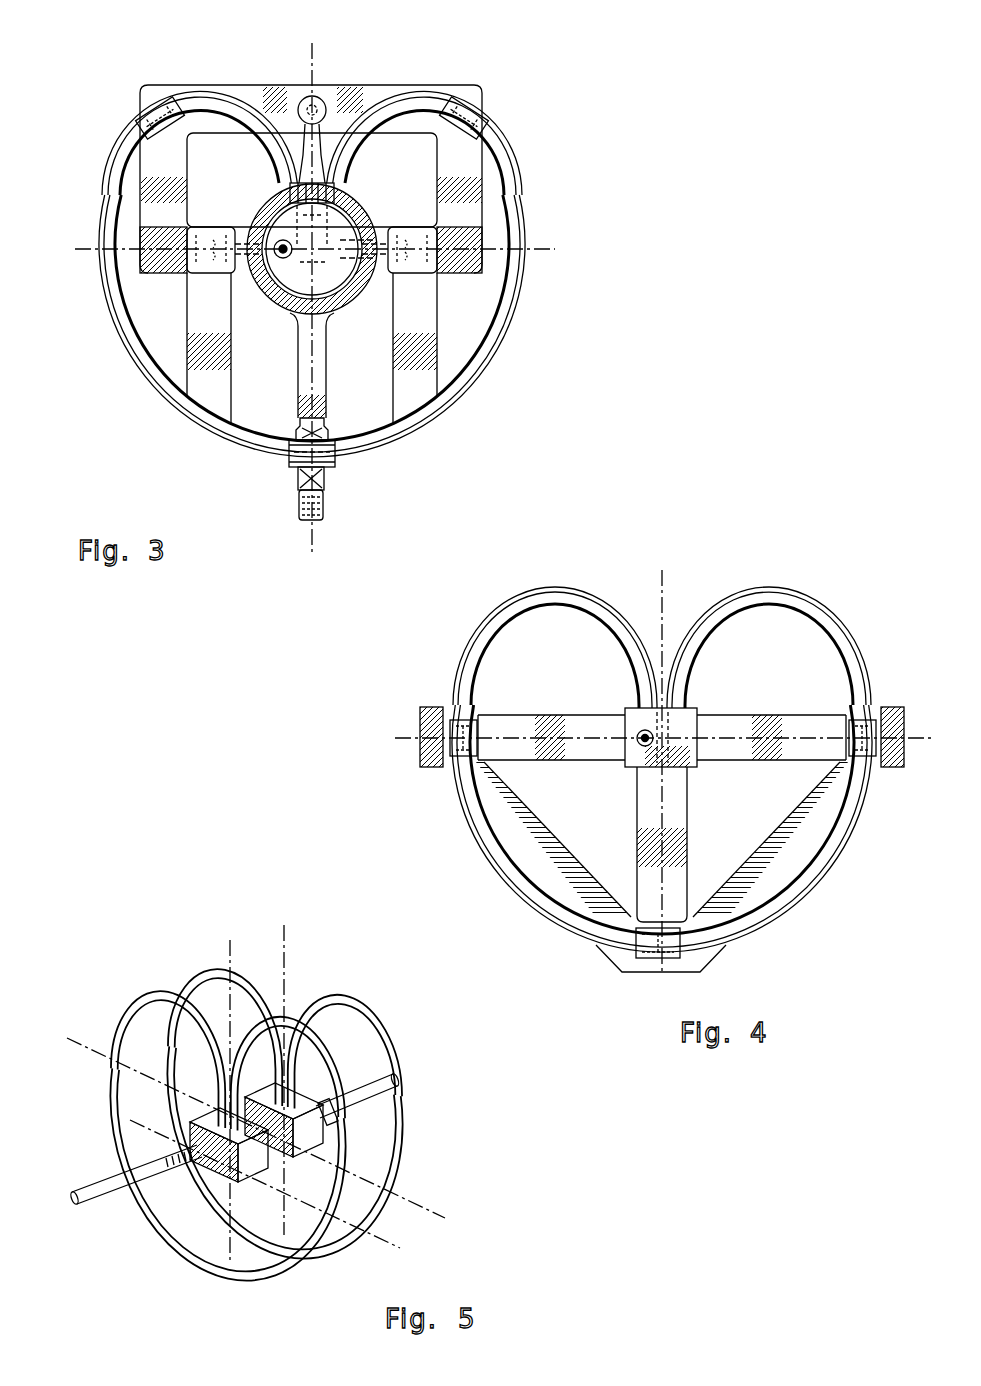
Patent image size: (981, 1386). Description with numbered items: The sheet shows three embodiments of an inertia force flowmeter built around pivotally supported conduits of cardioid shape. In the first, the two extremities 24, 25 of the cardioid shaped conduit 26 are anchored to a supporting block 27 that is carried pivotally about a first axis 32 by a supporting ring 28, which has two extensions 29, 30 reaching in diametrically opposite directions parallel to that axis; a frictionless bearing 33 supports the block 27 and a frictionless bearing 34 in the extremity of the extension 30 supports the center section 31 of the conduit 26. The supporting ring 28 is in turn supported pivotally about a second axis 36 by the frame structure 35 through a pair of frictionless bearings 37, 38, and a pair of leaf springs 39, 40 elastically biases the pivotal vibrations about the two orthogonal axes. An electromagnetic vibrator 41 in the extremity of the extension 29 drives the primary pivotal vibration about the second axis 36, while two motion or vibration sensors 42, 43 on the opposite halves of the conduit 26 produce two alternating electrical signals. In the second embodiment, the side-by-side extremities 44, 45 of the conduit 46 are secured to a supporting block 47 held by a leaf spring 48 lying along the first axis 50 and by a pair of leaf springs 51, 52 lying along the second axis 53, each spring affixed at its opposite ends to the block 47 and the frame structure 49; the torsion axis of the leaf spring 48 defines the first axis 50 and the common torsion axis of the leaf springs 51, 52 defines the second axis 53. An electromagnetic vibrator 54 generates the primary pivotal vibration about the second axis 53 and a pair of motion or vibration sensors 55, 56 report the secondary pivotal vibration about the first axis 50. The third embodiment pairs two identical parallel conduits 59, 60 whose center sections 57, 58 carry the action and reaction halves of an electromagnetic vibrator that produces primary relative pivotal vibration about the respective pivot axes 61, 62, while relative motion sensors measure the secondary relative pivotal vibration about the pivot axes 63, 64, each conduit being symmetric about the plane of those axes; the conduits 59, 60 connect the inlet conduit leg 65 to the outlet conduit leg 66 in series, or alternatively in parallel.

In FIG. 3, the extremity of the cardioid shaped conduit 24 is at (280, 163).
In FIG. 3, the extremity of the cardioid shaped conduit 25 is at (345, 163).
In FIG. 3, the cardioid shaped conduit 26 is at (105, 283).
In FIG. 3, the supporting block 27 is at (350, 290).
In FIG. 3, the supporting ring 28 is at (277, 290).
In FIG. 3, the extension 29 is at (316, 150).
In FIG. 3, the extension 30 is at (293, 385).
In FIG. 3, the center section of the conduit 31 is at (328, 453).
In FIG. 3, the first axis 32 is at (313, 543).
In FIG. 3, the frictionless bearing 33 is at (357, 217).
In FIG. 3, the frictionless bearing 34 is at (297, 478).
In FIG. 3, the frame structure 35 is at (485, 180).
In FIG. 3, the second axis 36 is at (540, 257).
In FIG. 3, the frictionless bearing 37 is at (217, 237).
In FIG. 3, the frictionless bearing 38 is at (417, 223).
In FIG. 3, the leaf spring 39 is at (190, 348).
In FIG. 3, the leaf spring 40 is at (432, 347).
In FIG. 3, the electromagnetic vibrator 41 is at (297, 107).
In FIG. 3, the motion or vibration sensor 42 is at (162, 107).
In FIG. 3, the motion or vibration sensor 43 is at (458, 108).
In FIG. 4, the extremity of the conduit 44 is at (643, 688).
In FIG. 4, the extremity of the conduit 45 is at (683, 688).
In FIG. 4, the conduit 46 is at (466, 655).
In FIG. 4, the supporting block 47 is at (690, 765).
In FIG. 4, the leaf spring 48 is at (648, 813).
In FIG. 4, the frame structure 49 is at (748, 890).
In FIG. 4, the first axis 50 is at (662, 592).
In FIG. 4, the leaf spring 51 is at (530, 727).
In FIG. 4, the leaf spring 52 is at (795, 727).
In FIG. 4, the second axis 53 is at (922, 733).
In FIG. 4, the electromagnetic vibrator 54 is at (628, 942).
In FIG. 4, the motion or vibration sensor 55 is at (455, 770).
In FIG. 4, the motion or vibration sensor 56 is at (870, 770).
In FIG. 5, the center section 57 is at (222, 1268).
In FIG. 5, the center section 58 is at (262, 1245).
In FIG. 5, the conduit 59 is at (173, 990).
In FIG. 5, the conduit 60 is at (347, 993).
In FIG. 5, the pivot axis 61 is at (397, 1243).
In FIG. 5, the pivot axis 62 is at (425, 1205).
In FIG. 5, the pivot axis 63 is at (230, 947).
In FIG. 5, the pivot axis 64 is at (287, 943).
In FIG. 5, the inlet conduit leg 65 is at (95, 1182).
In FIG. 5, the outlet conduit leg 66 is at (407, 1037).